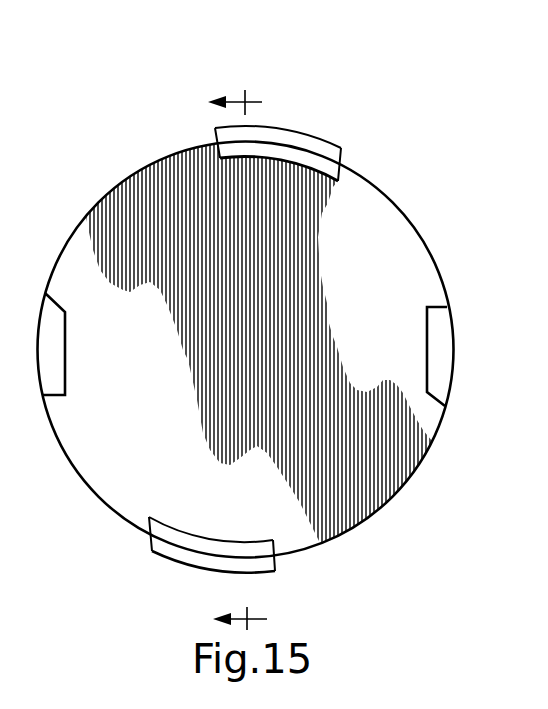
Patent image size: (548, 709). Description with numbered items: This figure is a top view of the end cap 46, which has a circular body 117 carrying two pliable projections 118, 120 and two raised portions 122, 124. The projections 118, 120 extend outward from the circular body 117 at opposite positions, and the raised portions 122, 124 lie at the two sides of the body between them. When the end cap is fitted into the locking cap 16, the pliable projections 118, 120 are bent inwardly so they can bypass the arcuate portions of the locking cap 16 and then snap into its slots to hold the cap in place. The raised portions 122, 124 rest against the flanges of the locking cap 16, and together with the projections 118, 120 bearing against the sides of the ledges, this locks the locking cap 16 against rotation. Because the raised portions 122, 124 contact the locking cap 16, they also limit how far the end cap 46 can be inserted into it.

The end cap 46 is at (266, 349).
The circular body 117 is at (411, 222).
The pliable projection 118 is at (329, 150).
The pliable projection 120 is at (233, 563).
The raised portion 122 is at (53, 343).
The raised portion 124 is at (440, 340).
The locking cap 16 is at (252, 360).